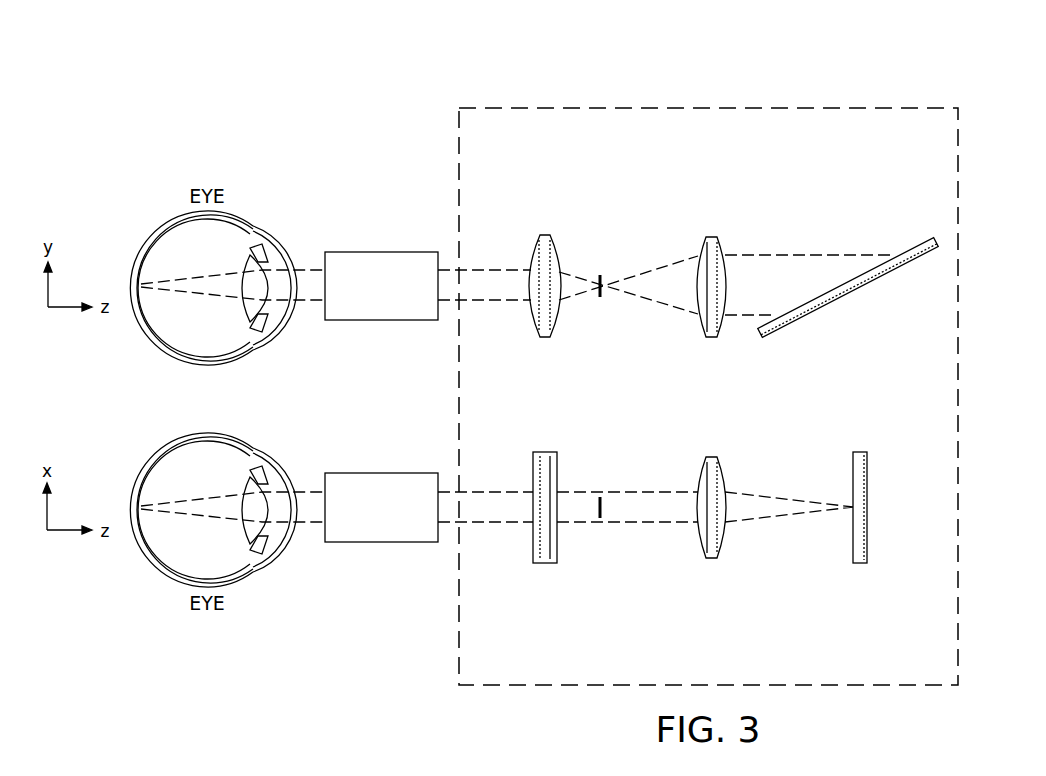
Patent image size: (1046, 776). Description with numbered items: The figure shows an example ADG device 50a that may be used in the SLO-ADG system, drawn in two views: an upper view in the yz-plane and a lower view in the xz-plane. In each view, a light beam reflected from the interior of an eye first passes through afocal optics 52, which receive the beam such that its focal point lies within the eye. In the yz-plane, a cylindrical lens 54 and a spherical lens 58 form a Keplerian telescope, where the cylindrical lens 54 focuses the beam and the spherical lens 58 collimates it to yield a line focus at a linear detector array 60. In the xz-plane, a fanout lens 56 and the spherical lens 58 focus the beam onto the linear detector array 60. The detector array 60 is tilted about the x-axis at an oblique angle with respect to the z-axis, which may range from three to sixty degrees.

The ADG device 50a is at (188, 115).
The afocal optics 52 is at (381, 252).
The cylindrical lens 54 is at (541, 235).
The fanout lens 56 is at (540, 563).
The spherical lens 58 is at (722, 590).
The linear detector array 60 is at (872, 592).